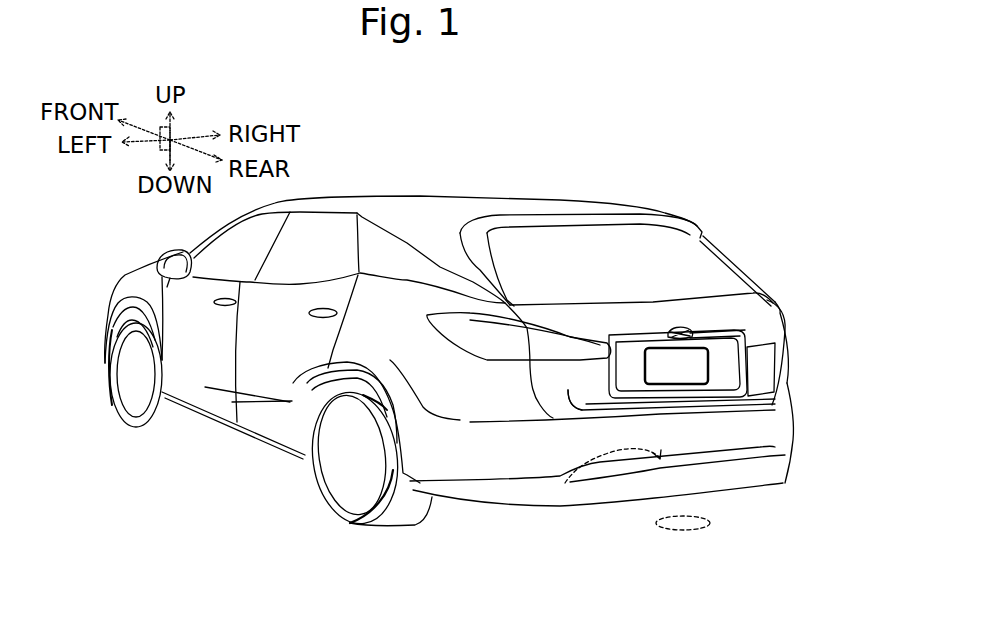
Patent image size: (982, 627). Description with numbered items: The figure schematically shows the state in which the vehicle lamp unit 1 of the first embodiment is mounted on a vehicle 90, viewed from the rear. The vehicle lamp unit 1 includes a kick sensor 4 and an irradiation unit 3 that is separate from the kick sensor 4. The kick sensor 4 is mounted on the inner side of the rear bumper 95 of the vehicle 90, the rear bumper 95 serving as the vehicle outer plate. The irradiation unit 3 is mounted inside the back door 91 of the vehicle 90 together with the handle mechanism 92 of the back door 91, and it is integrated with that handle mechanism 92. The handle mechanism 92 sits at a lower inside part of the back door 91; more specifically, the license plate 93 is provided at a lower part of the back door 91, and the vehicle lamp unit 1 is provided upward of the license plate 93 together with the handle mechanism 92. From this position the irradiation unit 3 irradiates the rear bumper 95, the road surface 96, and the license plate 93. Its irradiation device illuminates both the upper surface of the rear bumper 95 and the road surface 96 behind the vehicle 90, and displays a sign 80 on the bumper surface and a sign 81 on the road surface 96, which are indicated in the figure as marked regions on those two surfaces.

The vehicle 90 is at (470, 350).
The vehicle lamp unit 1 is at (646, 247).
The back door 91 is at (737, 287).
The irradiation unit 3 is at (684, 332).
The handle mechanism 92 is at (670, 333).
The license plate 93 is at (698, 360).
The sign 80 is at (753, 405).
The sign 81 is at (711, 525).
The rear bumper 95 is at (566, 392).
The road surface 96 is at (627, 535).
The kick sensor 4 is at (565, 483).